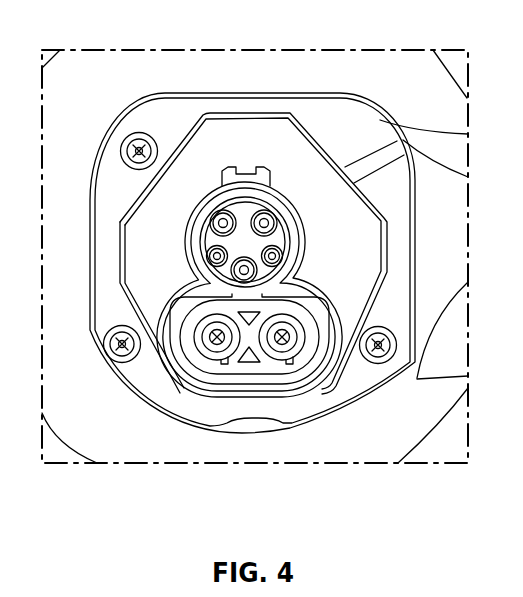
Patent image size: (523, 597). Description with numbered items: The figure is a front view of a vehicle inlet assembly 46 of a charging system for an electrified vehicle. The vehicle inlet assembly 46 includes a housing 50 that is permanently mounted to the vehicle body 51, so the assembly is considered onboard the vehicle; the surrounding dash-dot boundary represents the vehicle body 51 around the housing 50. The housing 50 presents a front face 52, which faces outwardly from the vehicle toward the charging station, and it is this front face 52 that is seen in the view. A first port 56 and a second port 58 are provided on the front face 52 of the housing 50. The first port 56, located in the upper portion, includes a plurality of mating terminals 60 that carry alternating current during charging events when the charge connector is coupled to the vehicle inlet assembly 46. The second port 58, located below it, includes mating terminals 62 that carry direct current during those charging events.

The vehicle inlet assembly 46 is at (136, 402).
The housing 50 is at (360, 395).
The vehicle body 51 is at (437, 53).
The front face 52 is at (357, 222).
The first port 56 is at (302, 234).
The second port 58 is at (301, 295).
The mating terminals 60 is at (223, 222).
The mating terminals 62 is at (217, 343).